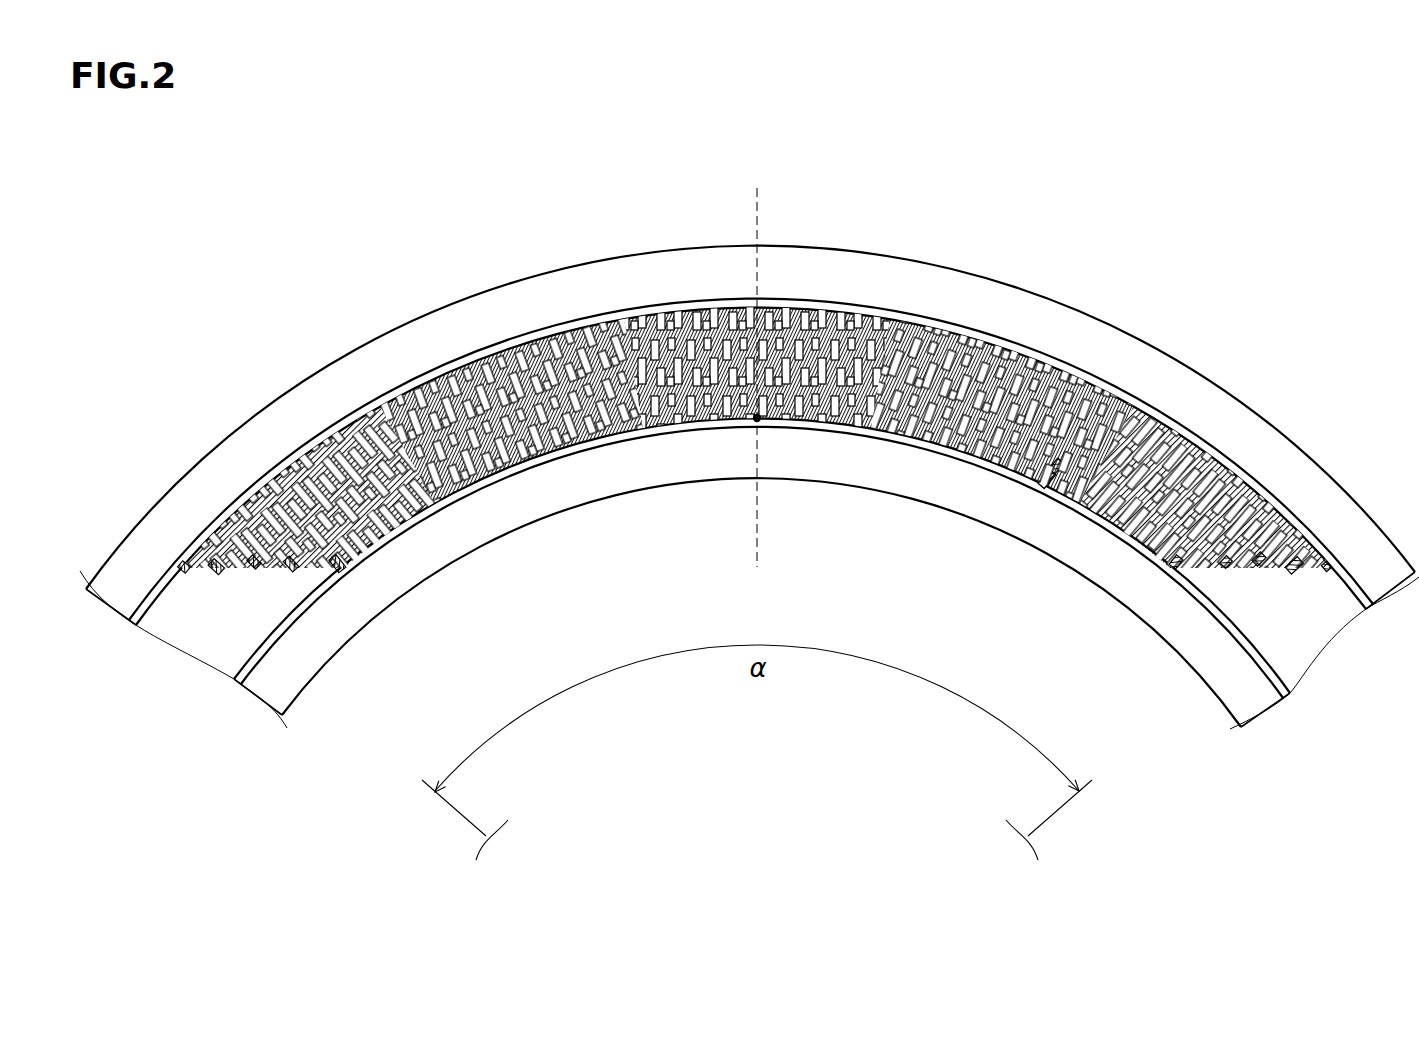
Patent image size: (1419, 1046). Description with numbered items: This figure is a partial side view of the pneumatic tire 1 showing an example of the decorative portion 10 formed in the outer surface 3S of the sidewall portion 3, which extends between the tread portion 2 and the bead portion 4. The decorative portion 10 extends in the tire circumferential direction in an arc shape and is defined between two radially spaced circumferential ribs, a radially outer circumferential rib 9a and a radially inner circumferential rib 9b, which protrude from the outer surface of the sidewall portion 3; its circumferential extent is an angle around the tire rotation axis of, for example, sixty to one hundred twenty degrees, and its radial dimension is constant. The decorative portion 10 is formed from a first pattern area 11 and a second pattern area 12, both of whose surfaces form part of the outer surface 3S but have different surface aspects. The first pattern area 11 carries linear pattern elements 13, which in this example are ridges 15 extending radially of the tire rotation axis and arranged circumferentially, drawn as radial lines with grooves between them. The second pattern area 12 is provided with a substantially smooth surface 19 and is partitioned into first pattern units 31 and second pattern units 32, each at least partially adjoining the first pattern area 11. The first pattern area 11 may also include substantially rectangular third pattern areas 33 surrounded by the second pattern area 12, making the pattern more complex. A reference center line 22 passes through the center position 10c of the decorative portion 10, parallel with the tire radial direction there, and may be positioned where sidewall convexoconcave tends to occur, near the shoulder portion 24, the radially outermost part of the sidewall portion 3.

The pneumatic tire 1 is at (1204, 303).
The tread portion 2 is at (519, 280).
The sidewall portion 3 is at (264, 593).
The outer surface of the sidewall portion 3S is at (1238, 590).
The bead portion 4 is at (416, 556).
The radially outer circumferential rib 9a is at (152, 590).
The radially inner circumferential rib 9b is at (253, 658).
The decorative portion 10 is at (724, 387).
The center position 10c is at (757, 418).
The first pattern area 11 is at (994, 366).
The second pattern area 12 is at (395, 400).
The linear pattern element 13 is at (757, 315).
The ridge 15 is at (598, 332).
The substantially smooth surface 19 is at (822, 337).
The reference center line 22 is at (756, 363).
The shoulder portion 24 is at (1216, 422).
The first pattern unit 31 is at (1047, 478).
The second pattern unit 32 is at (1053, 470).
The third pattern area 33 is at (215, 560).